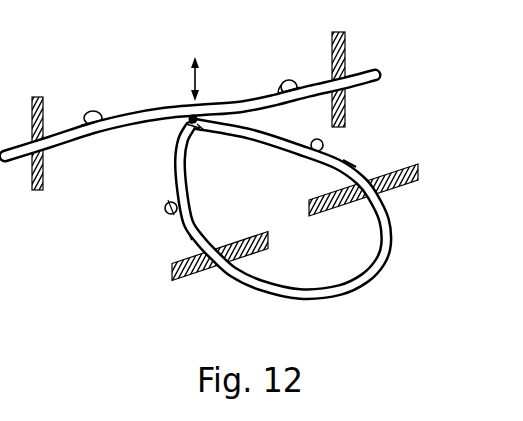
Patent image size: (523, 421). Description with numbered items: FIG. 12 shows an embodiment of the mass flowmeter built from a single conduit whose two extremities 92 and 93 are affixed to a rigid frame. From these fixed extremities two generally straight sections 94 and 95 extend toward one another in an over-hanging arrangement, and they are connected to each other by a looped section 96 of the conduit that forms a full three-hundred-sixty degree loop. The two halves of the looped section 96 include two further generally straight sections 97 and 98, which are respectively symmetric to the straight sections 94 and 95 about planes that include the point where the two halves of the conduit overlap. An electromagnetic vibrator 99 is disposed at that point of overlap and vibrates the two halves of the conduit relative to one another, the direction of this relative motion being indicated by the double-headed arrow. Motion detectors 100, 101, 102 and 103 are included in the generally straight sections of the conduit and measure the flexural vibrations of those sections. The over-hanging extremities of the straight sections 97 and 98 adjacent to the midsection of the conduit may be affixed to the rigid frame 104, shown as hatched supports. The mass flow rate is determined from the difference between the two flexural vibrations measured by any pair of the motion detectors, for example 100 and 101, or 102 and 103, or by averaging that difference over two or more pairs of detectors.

The conduit extremity 92 is at (50, 131).
The conduit extremity 93 is at (310, 89).
The generally straight section 94 is at (80, 138).
The generally straight section 95 is at (295, 85).
The looped section 96 is at (362, 286).
The generally straight section 97 is at (347, 174).
The generally straight section 98 is at (188, 234).
The electromagnetic vibrator 99 is at (189, 125).
The motion detector 100 is at (93, 109).
The motion detector 101 is at (325, 143).
The motion detector 102 is at (281, 85).
The motion detector 103 is at (165, 205).
The rigid frame 104 is at (206, 272).